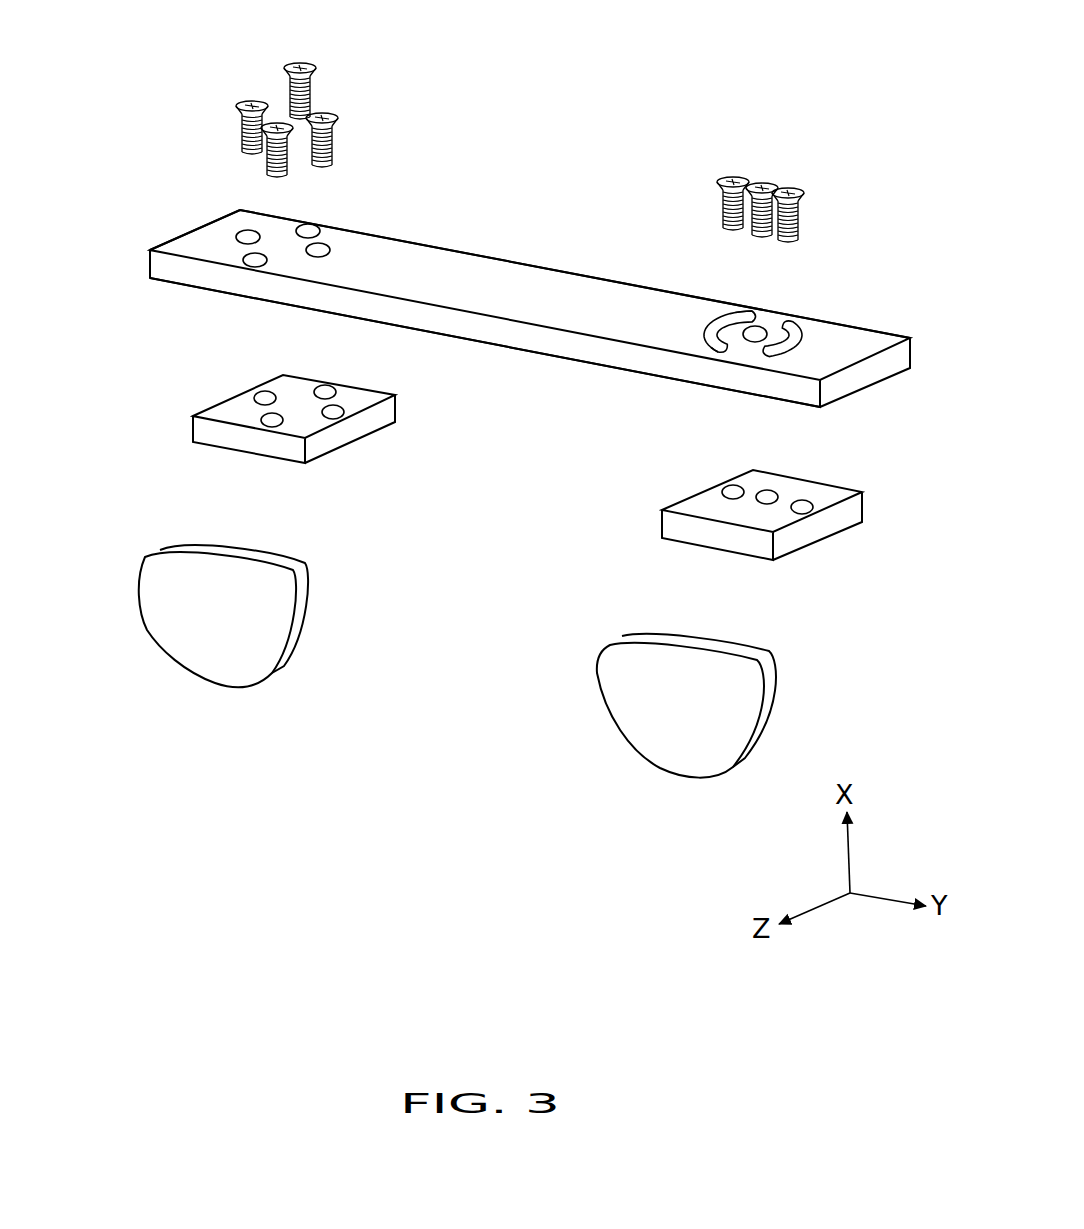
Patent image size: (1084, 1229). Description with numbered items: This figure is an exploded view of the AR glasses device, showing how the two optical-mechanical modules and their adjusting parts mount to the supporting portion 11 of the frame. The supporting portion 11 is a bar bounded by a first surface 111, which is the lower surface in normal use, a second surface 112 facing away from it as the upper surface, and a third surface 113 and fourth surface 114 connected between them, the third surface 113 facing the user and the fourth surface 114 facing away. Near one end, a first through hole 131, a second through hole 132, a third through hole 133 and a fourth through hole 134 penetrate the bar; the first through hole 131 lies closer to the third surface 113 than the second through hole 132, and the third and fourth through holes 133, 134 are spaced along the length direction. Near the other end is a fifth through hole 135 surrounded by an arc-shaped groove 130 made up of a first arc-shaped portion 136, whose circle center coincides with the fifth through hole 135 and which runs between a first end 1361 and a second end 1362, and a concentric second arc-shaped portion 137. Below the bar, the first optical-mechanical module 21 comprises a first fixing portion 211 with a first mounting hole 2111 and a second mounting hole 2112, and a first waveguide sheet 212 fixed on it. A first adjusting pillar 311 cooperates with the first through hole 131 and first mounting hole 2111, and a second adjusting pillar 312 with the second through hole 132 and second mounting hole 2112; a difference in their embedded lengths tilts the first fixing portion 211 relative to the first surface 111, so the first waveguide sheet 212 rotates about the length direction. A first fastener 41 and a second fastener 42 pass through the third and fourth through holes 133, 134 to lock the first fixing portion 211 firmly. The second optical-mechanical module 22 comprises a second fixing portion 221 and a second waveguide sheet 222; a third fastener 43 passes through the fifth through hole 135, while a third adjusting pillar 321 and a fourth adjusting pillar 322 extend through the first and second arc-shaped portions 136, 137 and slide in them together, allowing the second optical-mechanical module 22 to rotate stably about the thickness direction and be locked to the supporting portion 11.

The supporting portion 11 is at (153, 274).
The first surface 111 is at (520, 354).
The second surface 112 is at (243, 218).
The third surface 113 is at (497, 255).
The fourth surface 114 is at (163, 262).
The arc-shaped groove 130 is at (870, 281).
The first through hole 131 is at (318, 232).
The second through hole 132 is at (254, 265).
The third through hole 133 is at (241, 238).
The fourth through hole 134 is at (332, 250).
The fifth through hole 135 is at (753, 339).
The first arc-shaped portion 136 is at (728, 328).
The first end 1361 is at (738, 314).
The second end 1362 is at (718, 346).
The second arc-shaped portion 137 is at (806, 348).
The first optical-mechanical module 21 is at (390, 490).
The first fixing portion 211 is at (362, 428).
The first mounting hole 2111 is at (330, 370).
The second mounting hole 2112 is at (271, 426).
The first waveguide sheet 212 is at (265, 600).
The second optical-mechanical module 22 is at (860, 605).
The second fixing portion 221 is at (835, 522).
The second waveguide sheet 222 is at (740, 688).
The first adjusting pillar 311 is at (300, 90).
The second adjusting pillar 312 is at (275, 160).
The third adjusting pillar 321 is at (733, 200).
The fourth adjusting pillar 322 is at (790, 208).
The first fastener 41 is at (247, 120).
The second fastener 42 is at (322, 140).
The third fastener 43 is at (762, 205).